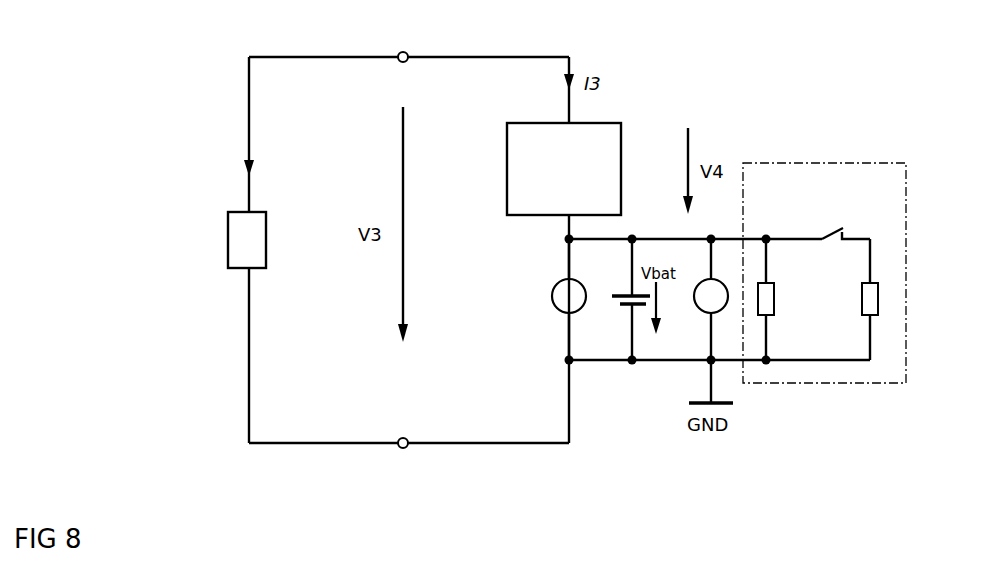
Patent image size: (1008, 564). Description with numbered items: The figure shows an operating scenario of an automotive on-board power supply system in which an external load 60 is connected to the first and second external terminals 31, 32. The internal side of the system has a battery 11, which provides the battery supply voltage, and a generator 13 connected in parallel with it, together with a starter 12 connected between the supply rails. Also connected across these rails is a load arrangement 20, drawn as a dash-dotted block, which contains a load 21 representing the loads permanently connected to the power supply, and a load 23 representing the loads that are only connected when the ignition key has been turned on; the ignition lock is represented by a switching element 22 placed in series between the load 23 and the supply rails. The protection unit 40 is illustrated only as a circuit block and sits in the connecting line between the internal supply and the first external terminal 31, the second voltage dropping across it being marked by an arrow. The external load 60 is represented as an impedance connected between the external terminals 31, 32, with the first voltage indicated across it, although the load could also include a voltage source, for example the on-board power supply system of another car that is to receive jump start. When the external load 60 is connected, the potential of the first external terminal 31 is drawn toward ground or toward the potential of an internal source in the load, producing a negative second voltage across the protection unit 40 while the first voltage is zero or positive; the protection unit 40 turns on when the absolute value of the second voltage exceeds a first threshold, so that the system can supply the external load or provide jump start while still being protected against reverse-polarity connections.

The battery 11 is at (616, 290).
The starter 12 is at (554, 287).
The generator 13 is at (698, 283).
The load arrangement 20 is at (824, 162).
The load 21 is at (776, 298).
The switching element 22 is at (832, 232).
The load 23 is at (858, 293).
The first external terminal 31 is at (402, 51).
The second external terminal 32 is at (404, 450).
The protection unit 40 is at (621, 160).
The external load 60 is at (232, 210).